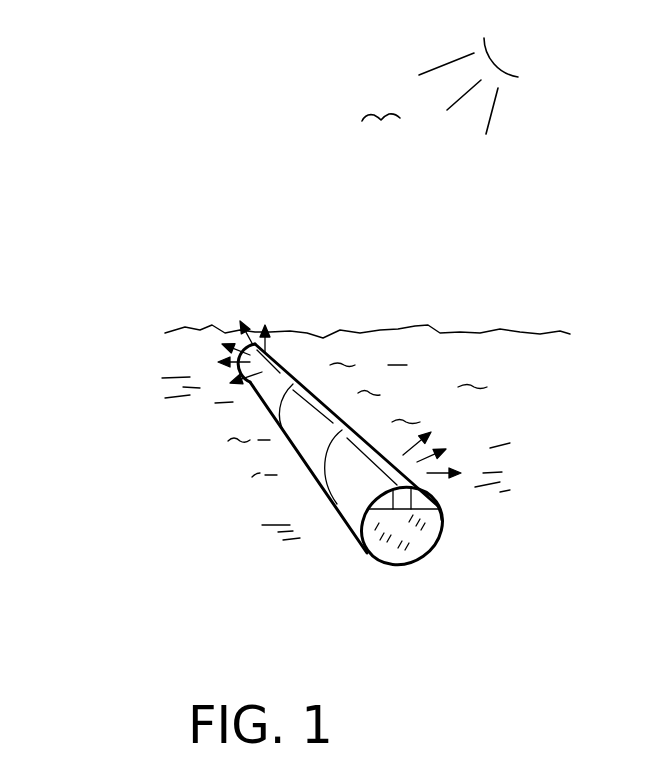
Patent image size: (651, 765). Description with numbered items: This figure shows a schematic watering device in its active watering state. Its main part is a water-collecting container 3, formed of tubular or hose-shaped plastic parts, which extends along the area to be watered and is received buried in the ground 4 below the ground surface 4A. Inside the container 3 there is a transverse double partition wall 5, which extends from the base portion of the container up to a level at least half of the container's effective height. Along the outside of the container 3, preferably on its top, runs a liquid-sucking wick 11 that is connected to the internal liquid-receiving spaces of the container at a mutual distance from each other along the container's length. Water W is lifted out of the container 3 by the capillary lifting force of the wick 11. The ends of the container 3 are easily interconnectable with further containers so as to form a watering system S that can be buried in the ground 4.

The water-collecting container 3 is at (268, 408).
The transverse double partition wall 5 is at (388, 547).
The liquid-sucking wick 11 is at (374, 447).
The ground 4 is at (500, 483).
The ground surface 4A is at (434, 316).
The water W is at (438, 460).
The watering system S is at (458, 518).